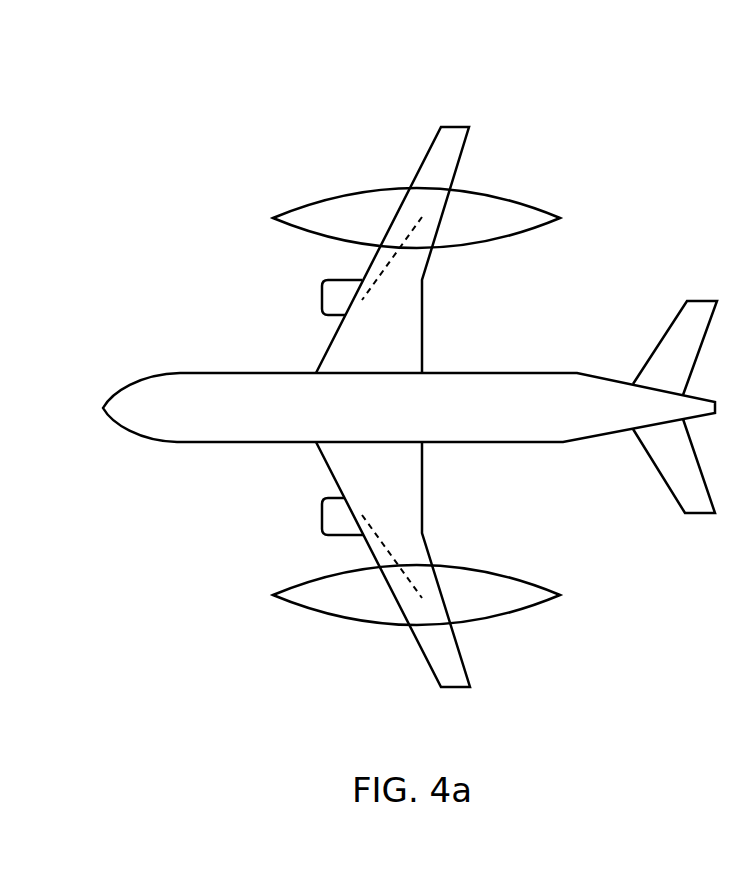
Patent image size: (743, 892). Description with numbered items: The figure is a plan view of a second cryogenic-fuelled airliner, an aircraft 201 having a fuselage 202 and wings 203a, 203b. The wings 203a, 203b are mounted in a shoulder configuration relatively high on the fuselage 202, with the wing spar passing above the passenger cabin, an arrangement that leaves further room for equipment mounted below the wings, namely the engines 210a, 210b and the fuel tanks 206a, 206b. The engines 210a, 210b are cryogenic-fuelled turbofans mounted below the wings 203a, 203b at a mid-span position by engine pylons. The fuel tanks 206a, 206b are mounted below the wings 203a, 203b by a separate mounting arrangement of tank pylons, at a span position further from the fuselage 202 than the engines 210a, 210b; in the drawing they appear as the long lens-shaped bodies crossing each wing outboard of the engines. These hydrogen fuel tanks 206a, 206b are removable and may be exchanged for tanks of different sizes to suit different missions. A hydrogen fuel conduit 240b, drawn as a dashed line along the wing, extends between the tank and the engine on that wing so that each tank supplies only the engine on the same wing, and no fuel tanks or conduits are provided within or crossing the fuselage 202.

The aircraft 201 is at (619, 170).
The fuselage 202 is at (497, 372).
The wing 203a is at (453, 688).
The wing 203b is at (452, 127).
The fuel tank 206a is at (375, 627).
The fuel tank 206b is at (382, 187).
The engine 210a is at (320, 513).
The engine 210b is at (320, 292).
The hydrogen fuel conduit 240b is at (402, 238).